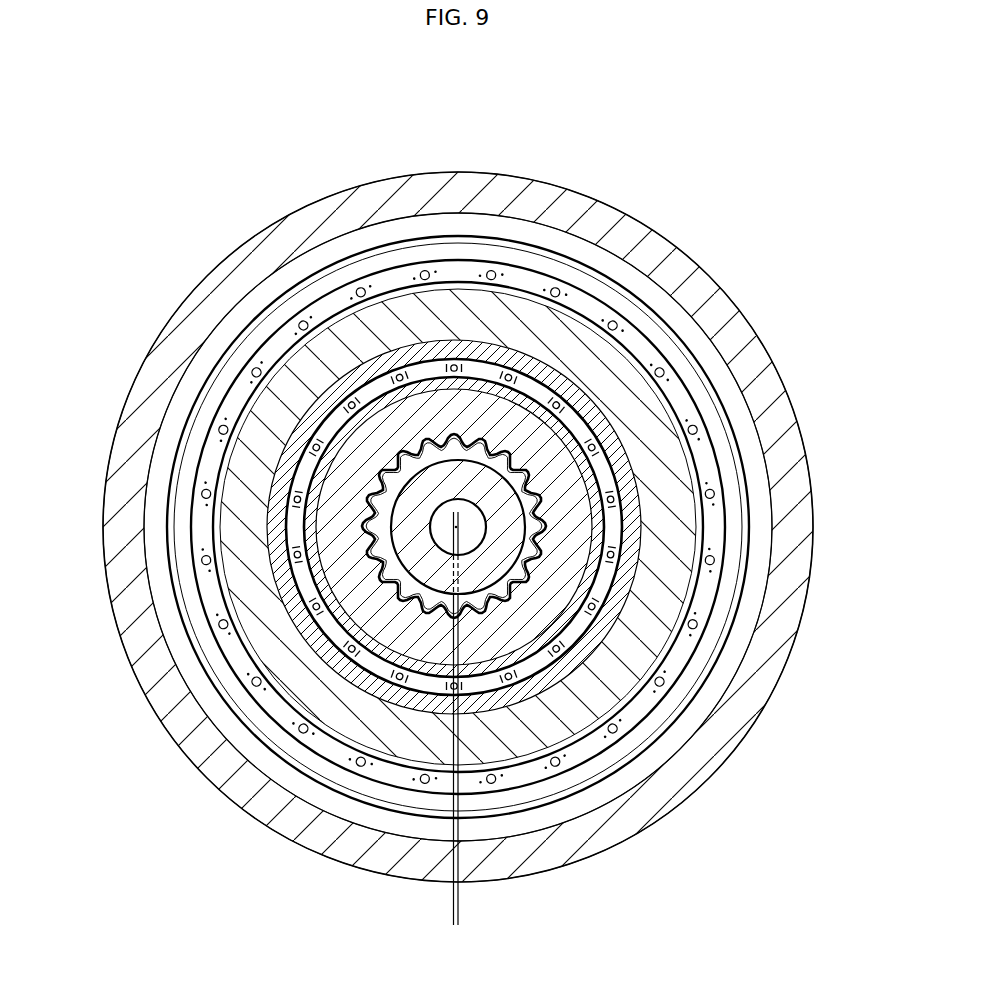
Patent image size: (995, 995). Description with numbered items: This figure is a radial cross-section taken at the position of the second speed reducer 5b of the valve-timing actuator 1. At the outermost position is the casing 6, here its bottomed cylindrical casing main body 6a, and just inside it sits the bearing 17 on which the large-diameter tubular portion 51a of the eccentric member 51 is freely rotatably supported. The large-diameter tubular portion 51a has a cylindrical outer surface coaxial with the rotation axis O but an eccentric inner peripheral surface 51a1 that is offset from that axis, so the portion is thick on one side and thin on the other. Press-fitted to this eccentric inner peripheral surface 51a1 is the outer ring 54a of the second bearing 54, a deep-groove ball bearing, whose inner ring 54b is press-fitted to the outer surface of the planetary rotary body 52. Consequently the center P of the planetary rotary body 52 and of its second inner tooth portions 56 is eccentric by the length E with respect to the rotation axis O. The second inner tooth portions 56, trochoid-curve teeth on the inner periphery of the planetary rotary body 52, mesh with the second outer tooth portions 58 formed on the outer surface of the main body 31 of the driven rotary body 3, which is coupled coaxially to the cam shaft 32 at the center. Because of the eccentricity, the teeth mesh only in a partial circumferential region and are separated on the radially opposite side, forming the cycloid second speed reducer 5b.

The actuator 1 is at (757, 237).
The driven rotary body 3 is at (458, 527).
The casing 6 is at (176, 298).
The casing main body 6a is at (118, 548).
The bearing 17 is at (740, 432).
The main body 31 is at (172, 735).
The cam shaft 32 is at (437, 487).
The eccentric member 51 is at (457, 307).
The large-diameter tubular portion 51a is at (458, 527).
The eccentric inner peripheral surface 51a1 is at (542, 367).
The planetary rotary body 52 is at (483, 662).
The second bearing 54 is at (642, 580).
The outer ring 54a is at (598, 642).
The inner ring 54b is at (538, 655).
The second inner tooth portions 56 is at (427, 617).
The second outer tooth portions 58 is at (388, 593).
The second speed reducer 5b is at (432, 702).
The rotation axis O is at (462, 527).
The center P is at (455, 527).
The length E is at (482, 915).